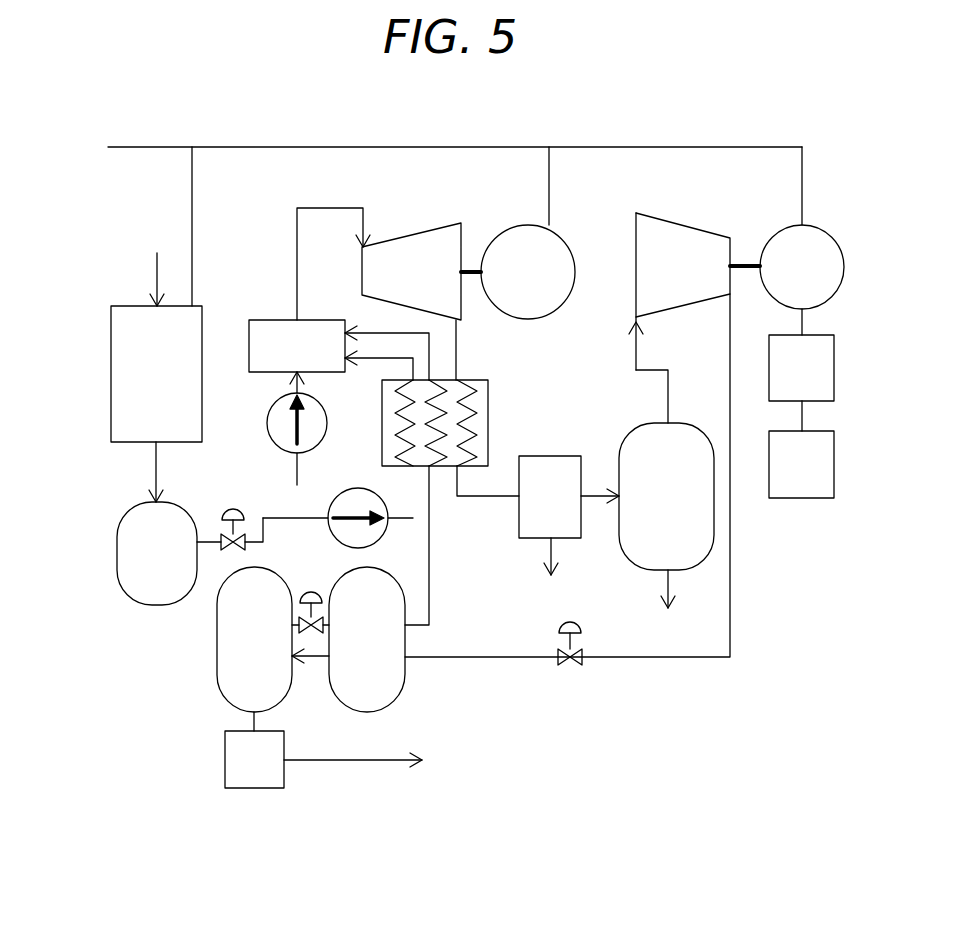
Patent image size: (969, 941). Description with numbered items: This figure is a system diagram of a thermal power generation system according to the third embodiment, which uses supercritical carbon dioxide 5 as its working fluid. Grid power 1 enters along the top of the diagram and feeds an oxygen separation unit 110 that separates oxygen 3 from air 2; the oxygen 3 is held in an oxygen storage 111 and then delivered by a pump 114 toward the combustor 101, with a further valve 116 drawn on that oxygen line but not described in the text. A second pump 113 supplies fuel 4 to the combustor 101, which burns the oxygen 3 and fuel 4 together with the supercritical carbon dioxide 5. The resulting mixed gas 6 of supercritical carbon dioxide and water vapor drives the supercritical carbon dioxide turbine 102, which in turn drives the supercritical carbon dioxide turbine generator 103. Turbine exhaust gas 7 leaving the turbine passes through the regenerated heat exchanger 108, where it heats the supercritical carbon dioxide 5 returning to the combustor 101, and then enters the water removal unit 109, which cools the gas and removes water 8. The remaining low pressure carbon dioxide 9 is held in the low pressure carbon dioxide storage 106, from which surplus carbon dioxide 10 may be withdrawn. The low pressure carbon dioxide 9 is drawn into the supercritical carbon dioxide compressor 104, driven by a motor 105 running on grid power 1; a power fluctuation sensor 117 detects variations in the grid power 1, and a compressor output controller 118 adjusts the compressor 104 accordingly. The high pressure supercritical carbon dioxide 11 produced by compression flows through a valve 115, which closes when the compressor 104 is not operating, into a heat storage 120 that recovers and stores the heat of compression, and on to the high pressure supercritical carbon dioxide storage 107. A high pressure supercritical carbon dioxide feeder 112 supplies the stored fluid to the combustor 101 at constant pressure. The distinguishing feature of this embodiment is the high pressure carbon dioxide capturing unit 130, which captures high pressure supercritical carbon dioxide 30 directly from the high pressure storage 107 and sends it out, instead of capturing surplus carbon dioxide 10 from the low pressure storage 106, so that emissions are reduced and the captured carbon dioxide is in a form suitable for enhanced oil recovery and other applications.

The grid power 1 is at (263, 147).
The air 2 is at (155, 274).
The oxygen 3 is at (155, 475).
The fuel 4 is at (293, 468).
The supercritical carbon dioxide 5 is at (375, 330).
The mixed gas 6 is at (314, 208).
The turbine exhaust gas 7 is at (457, 358).
The water 8 is at (547, 550).
The low pressure carbon dioxide 9 is at (635, 343).
The surplus carbon dioxide 10 is at (660, 587).
The high pressure supercritical carbon dioxide 11 is at (730, 610).
The high pressure supercritical carbon dioxide 30 is at (348, 760).
The combustor 101 is at (272, 318).
The supercritical CO2 turbine 102 is at (412, 228).
The supercritical CO2 turbine generator 103 is at (523, 225).
The supercritical CO2 compressor 104 is at (685, 218).
The motor 105 is at (823, 227).
The low pressure CO2 storage 106 is at (683, 420).
The high pressure supercritical CO2 storage 107 is at (215, 677).
The regenerated heat exchanger 108 is at (488, 402).
The water removal unit 109 is at (552, 455).
The oxygen separation unit 110 is at (110, 368).
The oxygen storage 111 is at (117, 553).
The high pressure supercritical CO2 feeder 112 is at (310, 590).
The pump 113 is at (267, 418).
The pump 114 is at (358, 487).
The valve 115 is at (582, 660).
The control valve 116 is at (232, 505).
The power fluctuation sensor 117 is at (835, 467).
The supercritical CO2 compressor output controller 118 is at (837, 368).
The heat storage 120 is at (405, 678).
The high pressure CO2 capturing unit 130 is at (252, 790).